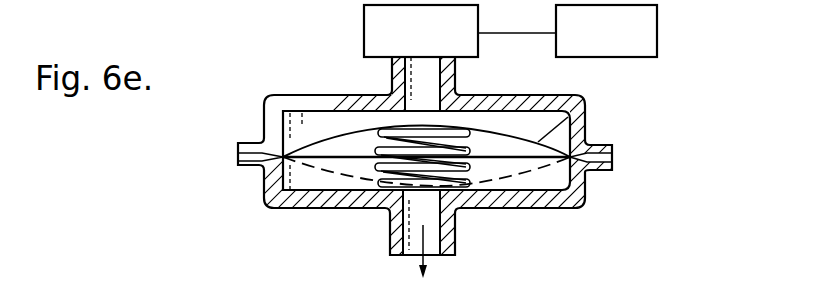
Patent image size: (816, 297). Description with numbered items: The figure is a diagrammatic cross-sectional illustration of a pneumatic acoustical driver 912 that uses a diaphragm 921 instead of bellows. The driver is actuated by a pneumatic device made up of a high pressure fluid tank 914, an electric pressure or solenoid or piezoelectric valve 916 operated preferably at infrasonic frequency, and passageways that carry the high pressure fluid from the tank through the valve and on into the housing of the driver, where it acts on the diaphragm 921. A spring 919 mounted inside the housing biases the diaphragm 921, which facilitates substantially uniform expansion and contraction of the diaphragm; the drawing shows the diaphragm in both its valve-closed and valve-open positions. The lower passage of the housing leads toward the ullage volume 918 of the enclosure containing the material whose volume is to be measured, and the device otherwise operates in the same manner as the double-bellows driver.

The pneumatic acoustical driver 912 is at (249, 104).
The high pressure fluid tank 914 is at (588, 43).
The electric pressure or solenoid or piezoelectric valve 916 is at (403, 43).
The ullage volume 918 is at (440, 255).
The spring 919 is at (467, 166).
The diaphragm 921 is at (578, 109).